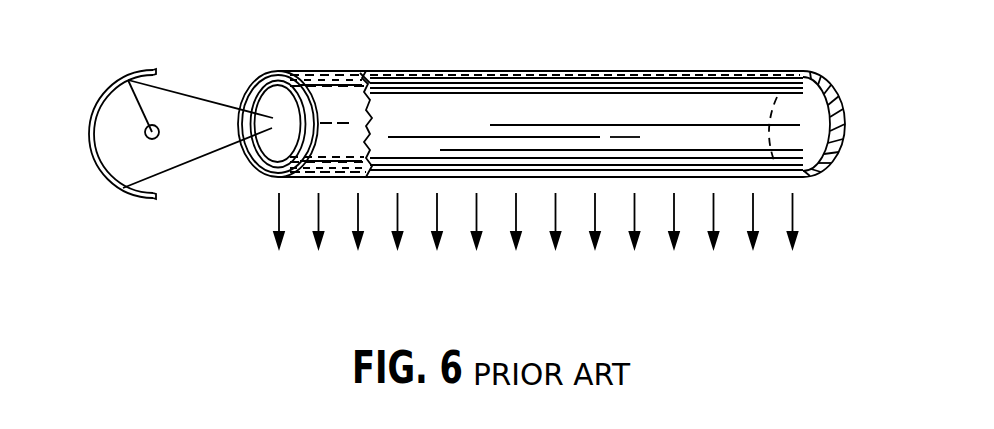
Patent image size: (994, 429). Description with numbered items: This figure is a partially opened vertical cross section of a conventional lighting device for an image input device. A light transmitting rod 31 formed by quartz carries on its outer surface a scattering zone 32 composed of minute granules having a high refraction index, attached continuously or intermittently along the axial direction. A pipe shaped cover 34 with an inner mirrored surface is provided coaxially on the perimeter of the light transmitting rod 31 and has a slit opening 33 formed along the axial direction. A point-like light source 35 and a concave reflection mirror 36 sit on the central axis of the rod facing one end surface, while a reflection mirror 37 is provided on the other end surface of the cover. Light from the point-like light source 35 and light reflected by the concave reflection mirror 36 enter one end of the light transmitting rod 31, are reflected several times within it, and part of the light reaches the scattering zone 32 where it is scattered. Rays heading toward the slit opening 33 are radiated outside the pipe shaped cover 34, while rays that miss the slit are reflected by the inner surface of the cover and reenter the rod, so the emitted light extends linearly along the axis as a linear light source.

The light transmitting rod 31 is at (393, 125).
The scattering zone 32 is at (523, 88).
The slit opening 33 is at (458, 177).
The pipe shaped cover 34 is at (647, 75).
The point-like light source 35 is at (153, 139).
The concave reflection mirror 36 is at (100, 183).
The reflection mirror 37 is at (815, 72).